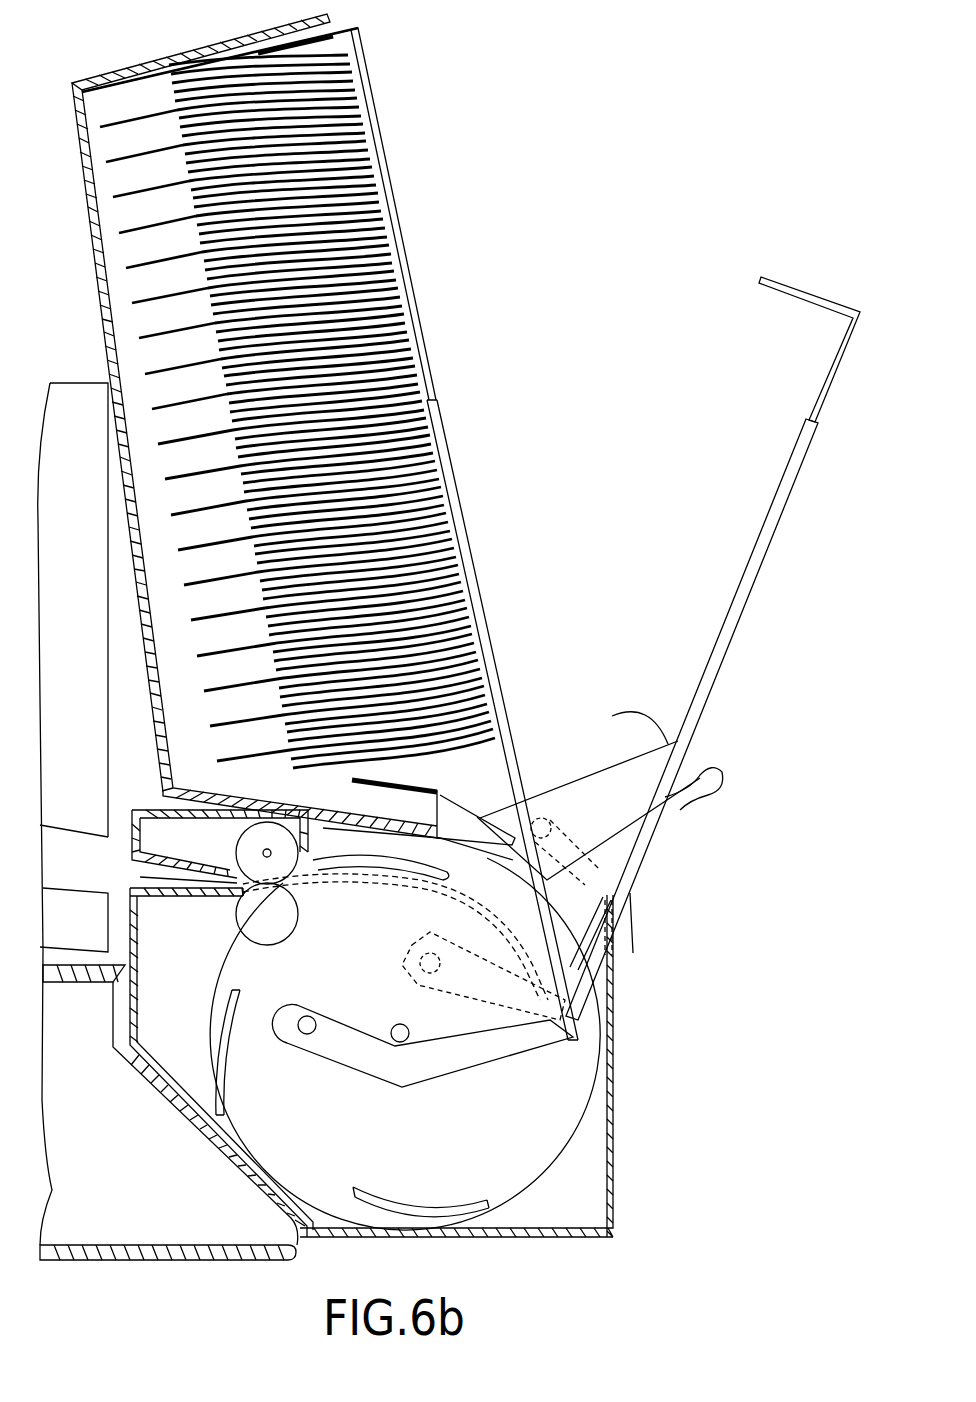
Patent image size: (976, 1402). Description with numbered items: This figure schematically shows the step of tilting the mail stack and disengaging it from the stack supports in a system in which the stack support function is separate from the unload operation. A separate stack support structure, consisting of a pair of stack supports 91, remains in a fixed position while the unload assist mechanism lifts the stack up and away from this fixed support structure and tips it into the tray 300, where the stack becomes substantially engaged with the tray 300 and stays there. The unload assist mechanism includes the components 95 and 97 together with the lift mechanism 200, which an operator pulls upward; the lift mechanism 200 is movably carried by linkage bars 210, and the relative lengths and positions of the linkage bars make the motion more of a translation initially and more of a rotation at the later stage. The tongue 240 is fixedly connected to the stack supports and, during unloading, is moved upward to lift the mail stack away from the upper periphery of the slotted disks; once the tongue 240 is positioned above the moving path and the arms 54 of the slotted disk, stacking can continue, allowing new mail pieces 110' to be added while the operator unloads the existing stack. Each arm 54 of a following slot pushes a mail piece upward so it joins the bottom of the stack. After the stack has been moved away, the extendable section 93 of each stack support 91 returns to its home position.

The tray 300 is at (275, 30).
The unload assist mechanism component 97 is at (394, 166).
The unload assist mechanism component 95 is at (496, 667).
The extendable section 93 is at (808, 294).
The stack support 91 is at (776, 537).
The lift mechanism 200 is at (621, 752).
The tongue 240 is at (505, 825).
The new mail pieces 110' is at (395, 916).
The arm 54 is at (222, 968).
The linkage bar 210 is at (437, 1068).